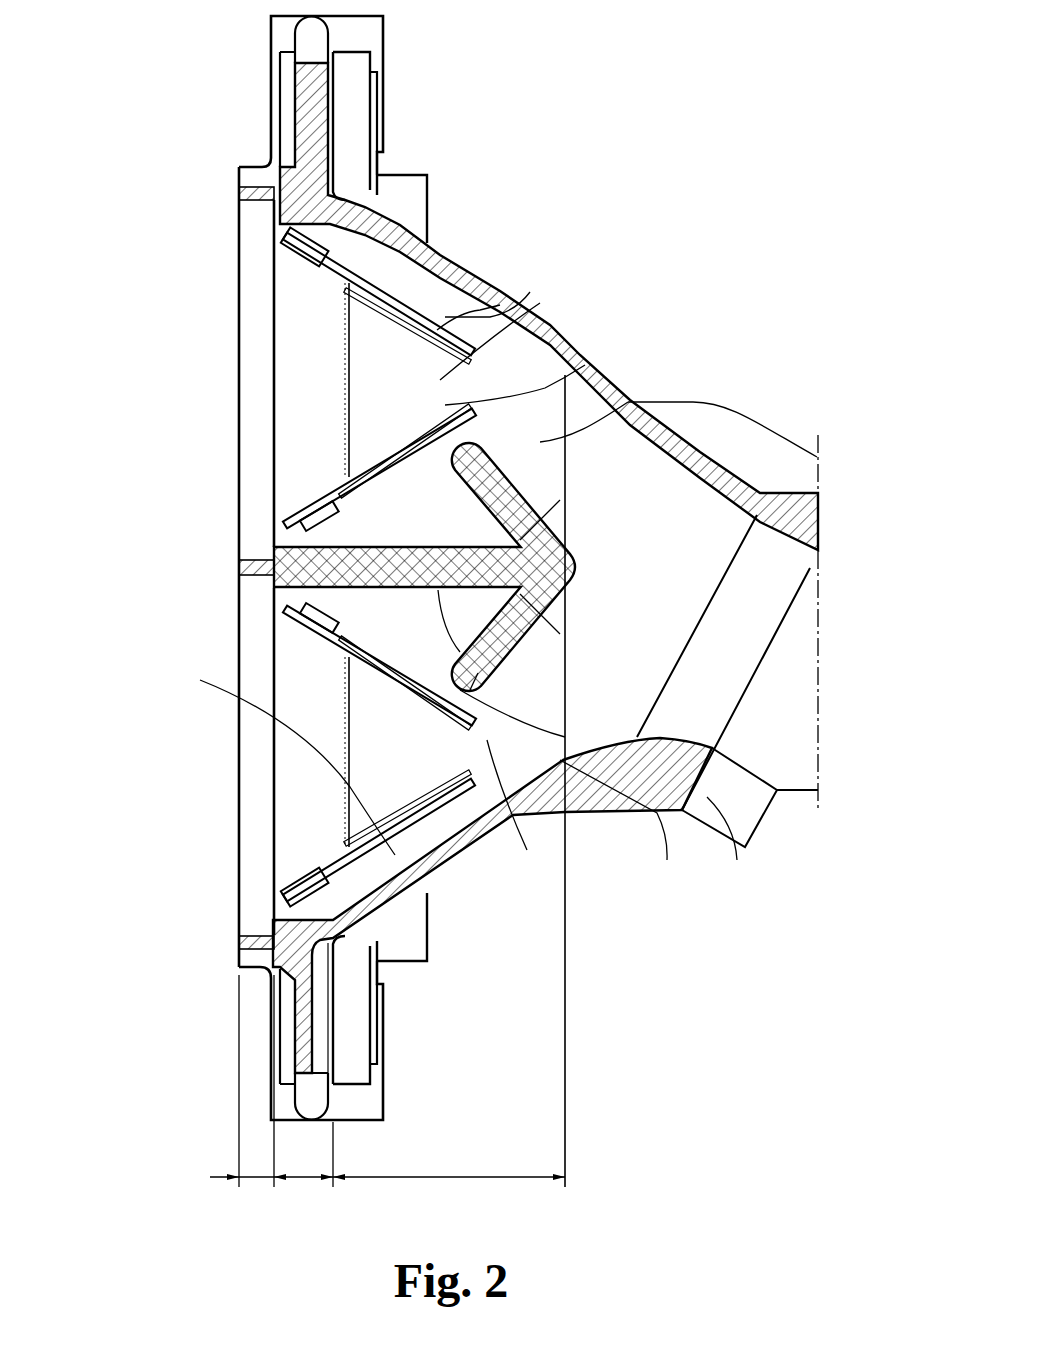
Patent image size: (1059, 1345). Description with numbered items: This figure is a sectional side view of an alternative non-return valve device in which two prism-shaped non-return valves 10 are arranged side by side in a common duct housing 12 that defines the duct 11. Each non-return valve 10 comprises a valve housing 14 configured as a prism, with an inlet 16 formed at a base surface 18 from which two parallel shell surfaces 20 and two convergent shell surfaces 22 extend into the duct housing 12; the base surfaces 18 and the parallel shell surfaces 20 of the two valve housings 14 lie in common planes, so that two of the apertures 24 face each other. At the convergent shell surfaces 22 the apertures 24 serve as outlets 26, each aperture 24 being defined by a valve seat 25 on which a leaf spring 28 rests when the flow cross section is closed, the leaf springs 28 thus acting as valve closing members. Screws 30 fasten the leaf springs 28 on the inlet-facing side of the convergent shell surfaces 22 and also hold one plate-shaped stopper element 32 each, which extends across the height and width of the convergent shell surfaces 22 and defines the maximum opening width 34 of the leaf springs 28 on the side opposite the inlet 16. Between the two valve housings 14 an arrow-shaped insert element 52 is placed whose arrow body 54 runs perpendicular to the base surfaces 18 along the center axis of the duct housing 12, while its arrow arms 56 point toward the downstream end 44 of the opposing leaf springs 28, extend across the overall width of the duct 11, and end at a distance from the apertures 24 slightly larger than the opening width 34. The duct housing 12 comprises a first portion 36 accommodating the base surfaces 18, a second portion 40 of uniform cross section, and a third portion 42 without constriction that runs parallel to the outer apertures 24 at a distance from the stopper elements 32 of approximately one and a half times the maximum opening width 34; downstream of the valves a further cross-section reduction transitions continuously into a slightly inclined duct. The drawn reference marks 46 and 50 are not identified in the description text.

The non-return valve 10 is at (312, 367).
The duct 11 is at (668, 530).
The duct housing 12 is at (746, 850).
The valve housing 14 is at (540, 345).
The inlet 16 is at (222, 347).
The base surface 18 is at (252, 962).
The parallel shell surfaces 20 is at (290, 295).
The convergent shell surfaces 22 is at (315, 297).
The apertures 24 is at (403, 838).
The valve seat 25 is at (445, 378).
The outlets 26 is at (590, 372).
The leaf spring 28 is at (425, 445).
The screws 30 is at (300, 893).
The stopper element 32 is at (318, 512).
The maximum opening width 34 is at (535, 833).
The first portion 36 is at (271, 1096).
The second portion 40 is at (308, 1170).
The third portion 42 is at (449, 794).
The downstream end 44 is at (457, 841).
The mixing body 46 is at (560, 441).
The seal 50 is at (408, 285).
The insert element 52 is at (558, 505).
The arrow body 54 is at (478, 673).
The arrow arms 56 is at (520, 638).